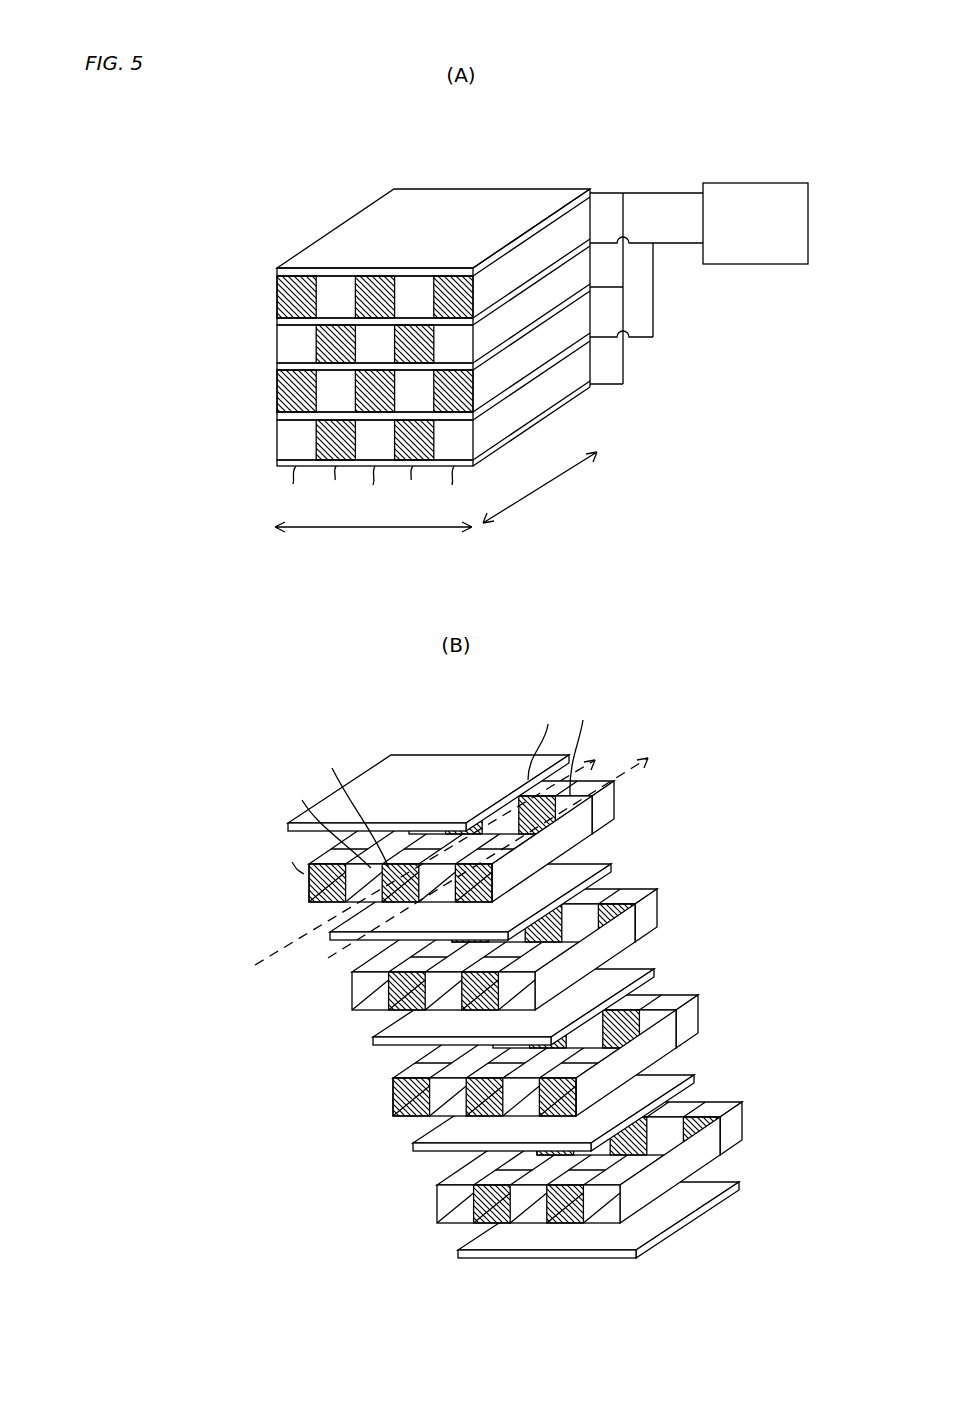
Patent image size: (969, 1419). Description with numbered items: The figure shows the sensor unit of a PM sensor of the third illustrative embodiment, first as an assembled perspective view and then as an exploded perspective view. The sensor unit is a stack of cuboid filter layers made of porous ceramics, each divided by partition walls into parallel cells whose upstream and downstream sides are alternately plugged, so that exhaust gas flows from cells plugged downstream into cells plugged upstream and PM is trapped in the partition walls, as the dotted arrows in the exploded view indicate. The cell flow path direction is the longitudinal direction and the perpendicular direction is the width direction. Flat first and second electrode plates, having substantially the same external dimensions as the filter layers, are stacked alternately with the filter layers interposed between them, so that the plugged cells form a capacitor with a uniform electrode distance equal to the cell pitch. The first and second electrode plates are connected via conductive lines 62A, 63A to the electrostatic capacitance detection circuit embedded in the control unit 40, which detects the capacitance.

The control unit 40 is at (742, 236).
The conductive line 62A is at (659, 192).
The conductive line 63A is at (668, 246).